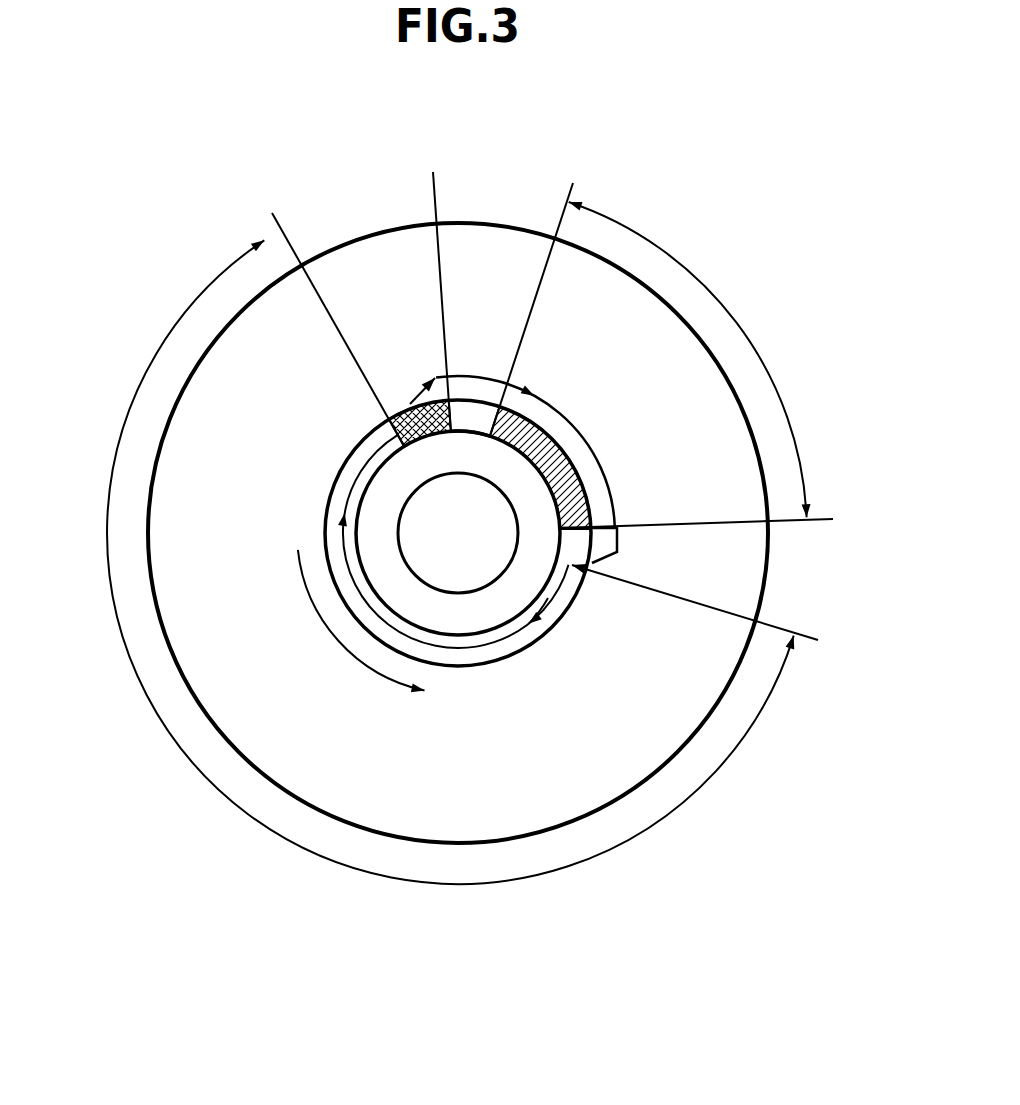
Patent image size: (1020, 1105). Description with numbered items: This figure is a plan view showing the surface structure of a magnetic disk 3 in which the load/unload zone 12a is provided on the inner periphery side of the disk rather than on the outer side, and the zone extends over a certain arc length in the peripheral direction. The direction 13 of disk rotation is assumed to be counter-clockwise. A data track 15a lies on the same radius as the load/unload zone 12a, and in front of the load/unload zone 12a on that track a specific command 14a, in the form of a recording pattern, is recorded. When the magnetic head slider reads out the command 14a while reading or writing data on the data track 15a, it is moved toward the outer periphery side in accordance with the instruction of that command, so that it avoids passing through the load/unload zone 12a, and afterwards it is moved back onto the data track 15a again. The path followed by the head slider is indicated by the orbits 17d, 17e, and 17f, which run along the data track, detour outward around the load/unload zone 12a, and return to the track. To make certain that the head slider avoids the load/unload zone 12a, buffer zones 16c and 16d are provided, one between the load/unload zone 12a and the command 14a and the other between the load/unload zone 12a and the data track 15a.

The magnetic disk 3 is at (310, 760).
The direction of disk rotation 13 is at (366, 662).
The data track 15a is at (483, 653).
The command 14a is at (411, 403).
The load/unload zone 12a is at (585, 488).
The buffer zone 16c is at (472, 417).
The buffer zone 16d is at (577, 547).
The orbit 17e is at (577, 425).
The orbit 17d is at (357, 477).
The orbit 17f is at (548, 598).